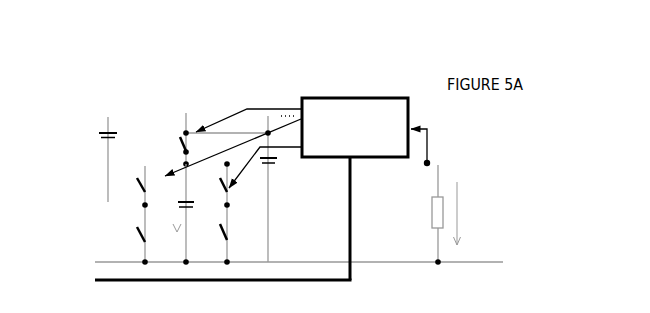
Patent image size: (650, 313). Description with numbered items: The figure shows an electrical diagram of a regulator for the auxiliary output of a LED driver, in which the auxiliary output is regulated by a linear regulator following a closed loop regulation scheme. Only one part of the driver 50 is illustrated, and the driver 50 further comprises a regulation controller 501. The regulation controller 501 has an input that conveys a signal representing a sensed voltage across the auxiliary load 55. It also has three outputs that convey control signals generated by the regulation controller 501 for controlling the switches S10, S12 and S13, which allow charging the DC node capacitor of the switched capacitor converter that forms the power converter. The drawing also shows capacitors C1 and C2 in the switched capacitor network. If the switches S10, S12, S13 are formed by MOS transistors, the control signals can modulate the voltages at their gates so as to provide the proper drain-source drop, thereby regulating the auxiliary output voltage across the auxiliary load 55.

The driver 50 is at (93, 102).
The switch S10 is at (179, 143).
The switch S12 is at (137, 190).
The switch S13 is at (233, 189).
The capacitor C1 is at (179, 214).
The capacitor C2 is at (276, 155).
The regulation controller 501 is at (367, 136).
The auxiliary load 55 is at (446, 207).